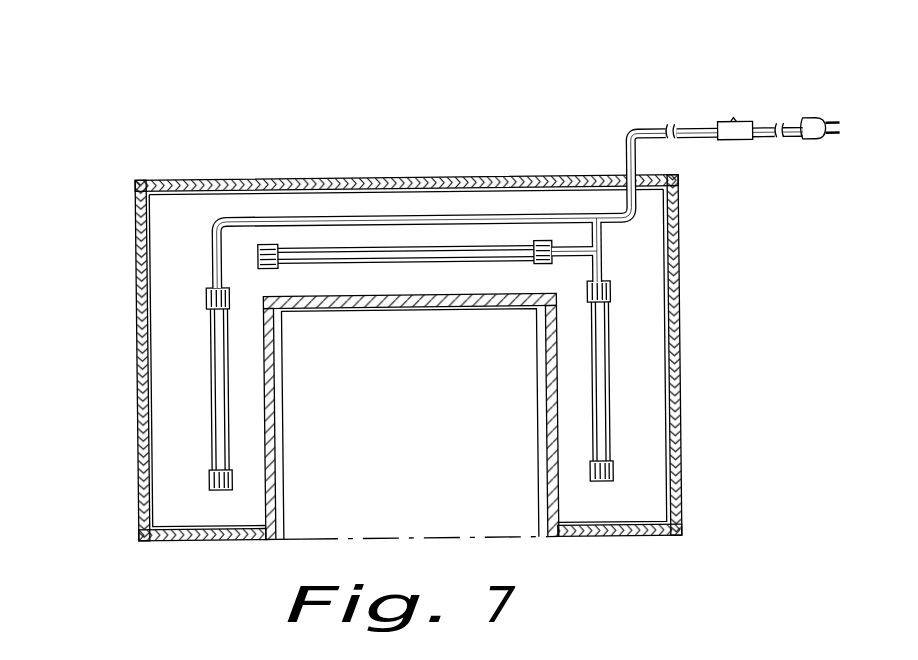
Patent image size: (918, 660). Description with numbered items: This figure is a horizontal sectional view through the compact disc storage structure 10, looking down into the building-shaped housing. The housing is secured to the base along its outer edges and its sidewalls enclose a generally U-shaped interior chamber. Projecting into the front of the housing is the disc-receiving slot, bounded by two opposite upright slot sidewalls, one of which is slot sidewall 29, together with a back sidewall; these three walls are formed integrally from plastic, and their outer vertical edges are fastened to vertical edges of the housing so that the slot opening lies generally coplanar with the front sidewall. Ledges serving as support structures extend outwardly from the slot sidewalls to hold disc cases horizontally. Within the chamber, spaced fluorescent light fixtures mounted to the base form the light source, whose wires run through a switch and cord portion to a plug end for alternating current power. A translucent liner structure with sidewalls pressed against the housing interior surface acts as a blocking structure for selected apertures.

The storage structure 10 is at (489, 300).
The slot sidewall 29 is at (283, 543).